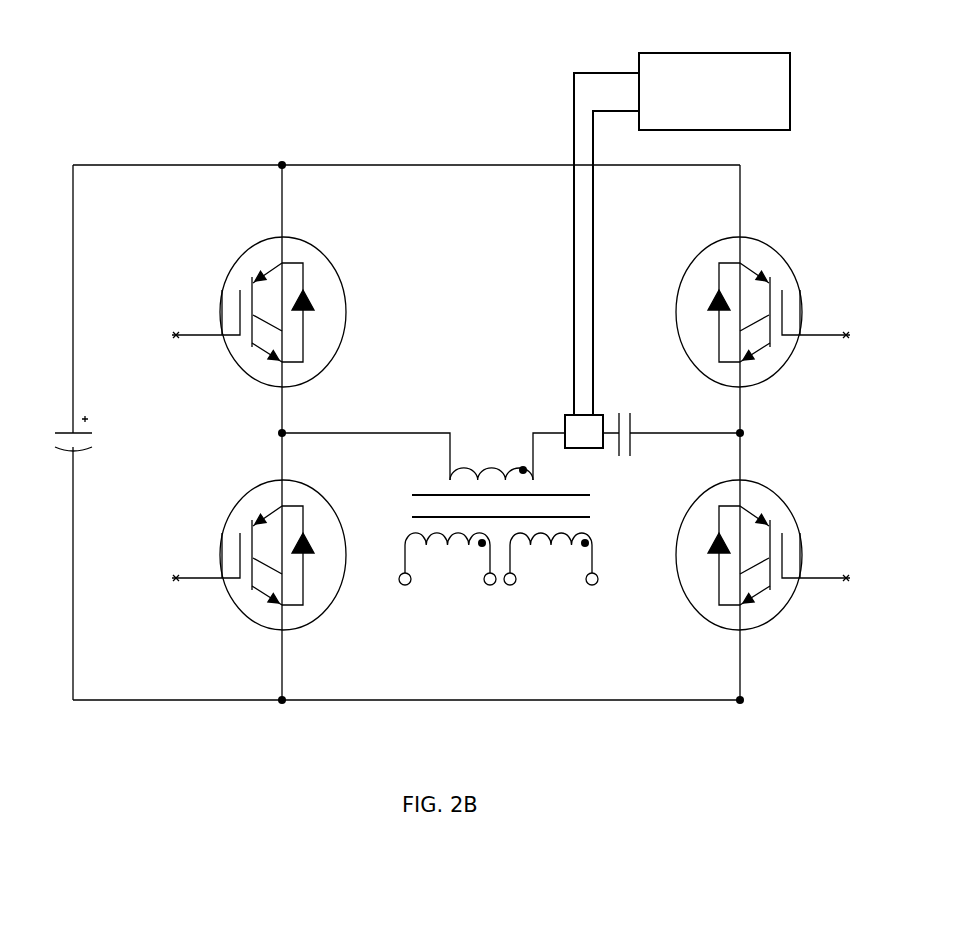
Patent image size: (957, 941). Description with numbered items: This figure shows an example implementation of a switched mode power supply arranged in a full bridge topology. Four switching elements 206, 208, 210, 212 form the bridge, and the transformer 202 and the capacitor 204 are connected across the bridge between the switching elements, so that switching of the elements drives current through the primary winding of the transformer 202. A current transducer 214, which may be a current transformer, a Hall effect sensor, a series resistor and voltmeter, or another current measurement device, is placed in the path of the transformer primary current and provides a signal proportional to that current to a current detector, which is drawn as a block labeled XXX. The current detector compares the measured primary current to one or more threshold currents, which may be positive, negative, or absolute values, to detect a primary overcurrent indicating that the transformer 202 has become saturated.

The transformer 202 is at (442, 410).
The capacitor 204 is at (632, 425).
The switching element 206 is at (783, 255).
The switching element 208 is at (257, 484).
The switching element 210 is at (256, 241).
The switching element 212 is at (777, 495).
The current transducer 214 is at (565, 415).
The current detector XXX is at (790, 53).